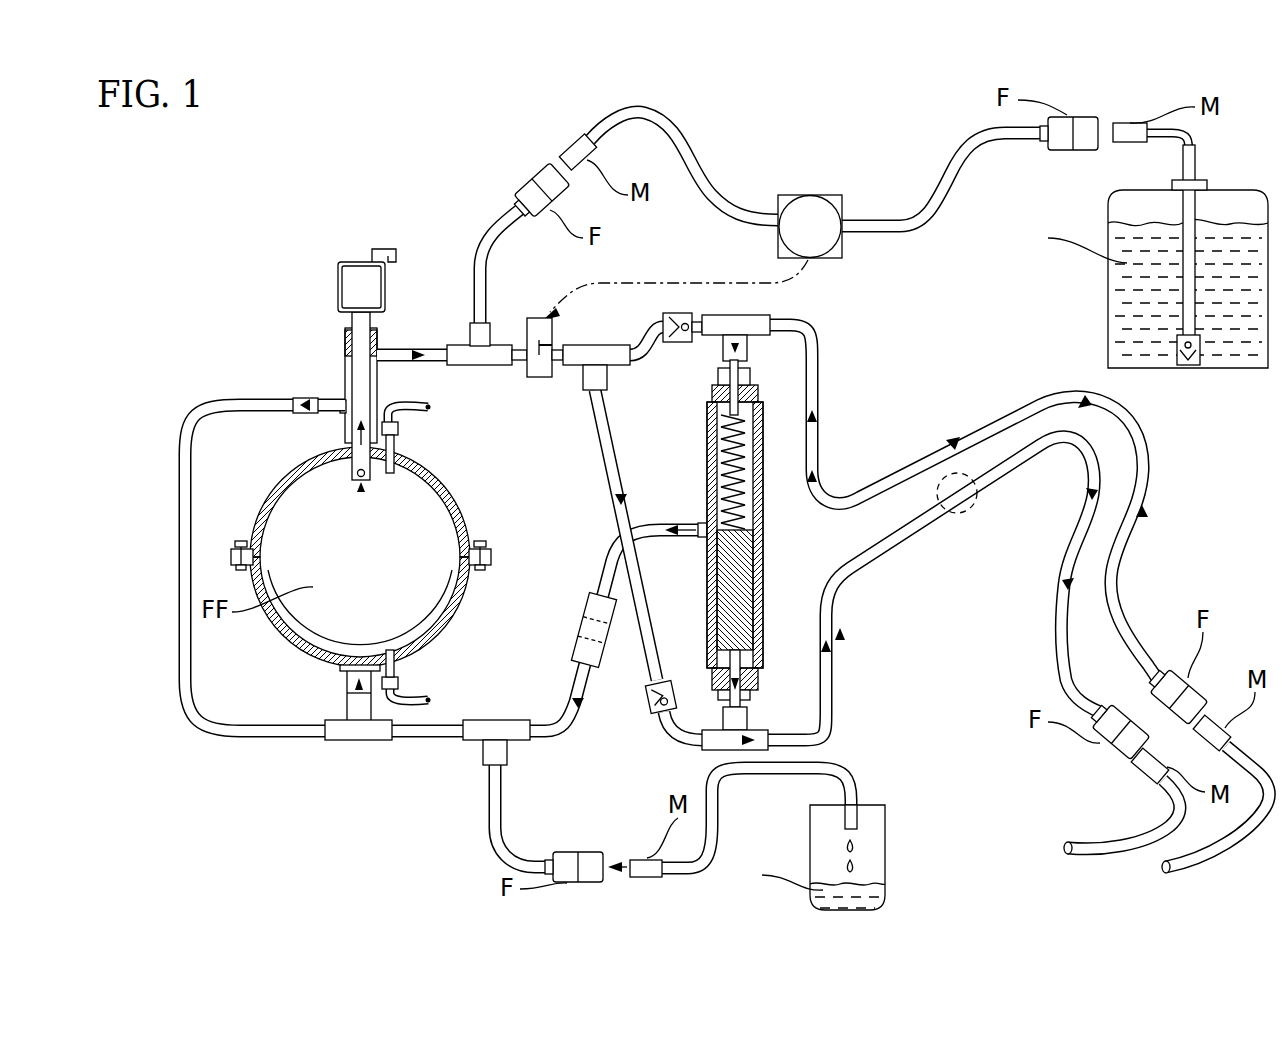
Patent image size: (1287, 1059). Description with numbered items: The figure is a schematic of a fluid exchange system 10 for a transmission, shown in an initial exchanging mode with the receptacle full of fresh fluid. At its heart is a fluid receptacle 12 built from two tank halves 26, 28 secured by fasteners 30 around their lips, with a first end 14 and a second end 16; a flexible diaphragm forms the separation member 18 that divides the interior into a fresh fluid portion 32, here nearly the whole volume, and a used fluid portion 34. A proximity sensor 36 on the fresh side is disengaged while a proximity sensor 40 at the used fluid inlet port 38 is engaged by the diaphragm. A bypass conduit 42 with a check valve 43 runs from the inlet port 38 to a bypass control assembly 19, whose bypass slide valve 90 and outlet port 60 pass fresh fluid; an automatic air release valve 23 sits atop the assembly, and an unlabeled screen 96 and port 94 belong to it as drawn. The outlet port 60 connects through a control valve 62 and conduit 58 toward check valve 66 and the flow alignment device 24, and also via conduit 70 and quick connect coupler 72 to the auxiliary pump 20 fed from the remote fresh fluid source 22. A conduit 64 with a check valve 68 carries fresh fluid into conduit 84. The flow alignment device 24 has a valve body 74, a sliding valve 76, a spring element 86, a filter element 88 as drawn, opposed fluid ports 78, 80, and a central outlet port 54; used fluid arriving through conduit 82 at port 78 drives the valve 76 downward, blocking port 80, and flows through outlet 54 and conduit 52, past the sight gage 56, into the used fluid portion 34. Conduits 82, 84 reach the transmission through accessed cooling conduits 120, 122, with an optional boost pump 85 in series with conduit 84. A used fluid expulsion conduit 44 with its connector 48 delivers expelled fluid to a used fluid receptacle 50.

The fluid exchange system 10 is at (300, 270).
The fluid receptacle 12 is at (480, 590).
The first end 14 is at (347, 445).
The second end 16 is at (307, 647).
The separation member 18 is at (497, 553).
The bypass control assembly 19 is at (333, 362).
The auxiliary pump 20 is at (843, 257).
The remote source of fresh hydraulic fluid 22 is at (1108, 317).
The automatic air release valve 23 is at (388, 275).
The flow alignment device 24 is at (685, 625).
The tank half 26 is at (465, 525).
The tank half 28 is at (465, 605).
The fasteners 30 is at (240, 540).
The fresh fluid portion 32 is at (458, 493).
The used fluid portion 34 is at (448, 623).
The proximity sensor 36 is at (398, 428).
The used fluid inlet port 38 is at (340, 670).
The proximity sensor 40 is at (398, 680).
The bypass conduit 42 is at (237, 405).
The check valve 43 is at (300, 403).
The used fluid expulsion conduit 44 is at (505, 797).
The female quick connector 48 is at (575, 852).
The used fluid receptacle 50 is at (887, 850).
The conduit 52 is at (562, 733).
The central outlet port 54 is at (698, 545).
The sight gage 56 is at (577, 625).
The conduit 58 is at (573, 340).
The outlet port 60 is at (383, 352).
The control valve 62 is at (530, 330).
The conduit 64 is at (613, 443).
The check valve 66 is at (678, 343).
The check valve 68 is at (653, 700).
The conduit 70 is at (722, 205).
The quick connect coupler 72 is at (522, 185).
The valve body 74 is at (763, 587).
The valve 76 is at (763, 540).
The fluid port 78 is at (763, 408).
The fluid port 80 is at (760, 677).
The conduit 82 is at (893, 478).
The conduit 84 is at (853, 610).
The boost pump 85 is at (963, 512).
The spring element 86 is at (750, 487).
The filter element 88 is at (763, 623).
The bypass slide valve 90 is at (378, 400).
The return port 94 is at (347, 420).
The screen 96 is at (357, 350).
The accessed cooling conduit 120 is at (1125, 833).
The accessed cooling conduit 122 is at (1238, 838).